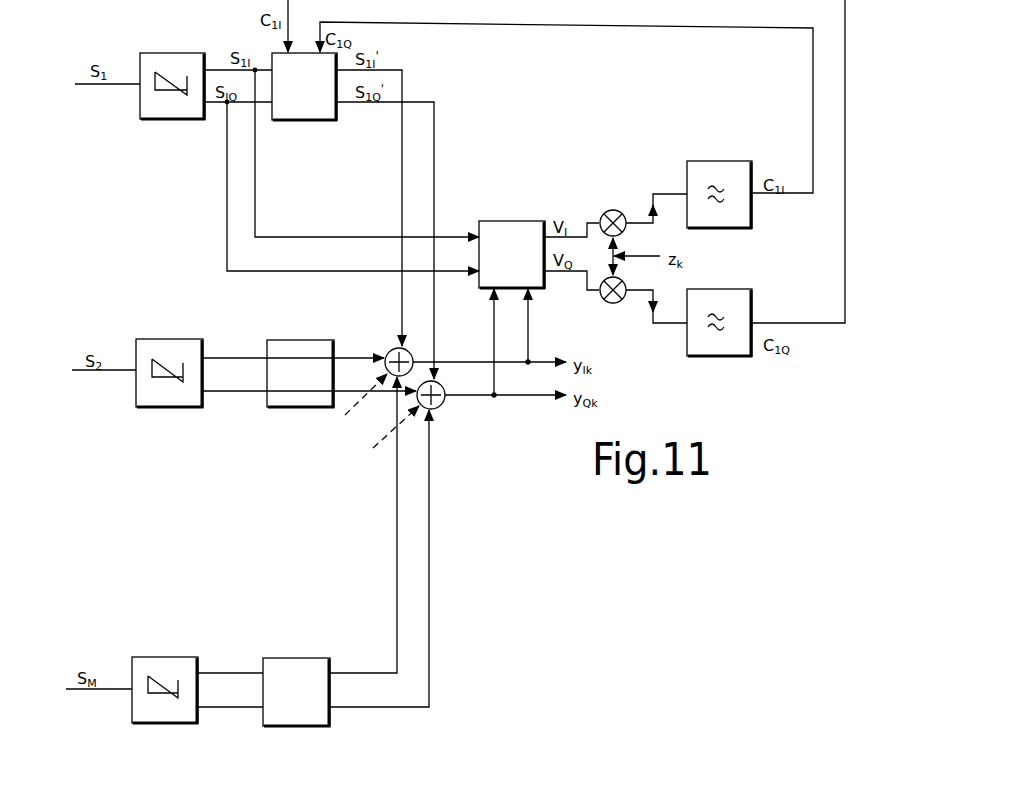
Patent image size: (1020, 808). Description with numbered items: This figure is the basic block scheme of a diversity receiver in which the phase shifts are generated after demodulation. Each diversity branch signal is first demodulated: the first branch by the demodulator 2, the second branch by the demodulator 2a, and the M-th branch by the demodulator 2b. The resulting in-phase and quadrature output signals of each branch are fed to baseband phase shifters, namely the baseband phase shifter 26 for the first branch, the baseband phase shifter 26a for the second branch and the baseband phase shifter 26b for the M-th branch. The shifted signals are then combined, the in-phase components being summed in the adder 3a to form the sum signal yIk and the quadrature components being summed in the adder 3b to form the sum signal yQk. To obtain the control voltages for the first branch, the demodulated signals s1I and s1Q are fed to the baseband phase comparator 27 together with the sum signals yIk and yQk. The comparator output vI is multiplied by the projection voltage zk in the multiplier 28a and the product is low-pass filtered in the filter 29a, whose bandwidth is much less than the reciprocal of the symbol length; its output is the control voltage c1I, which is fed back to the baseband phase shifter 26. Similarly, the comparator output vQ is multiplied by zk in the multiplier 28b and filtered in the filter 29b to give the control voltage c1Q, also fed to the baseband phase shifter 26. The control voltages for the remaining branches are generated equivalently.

The demodulator 2 is at (165, 120).
The baseband phase shifter 26 is at (312, 121).
The demodulator 2a is at (170, 408).
The baseband phase shifter 26a is at (302, 408).
The demodulator 2b is at (165, 724).
The baseband phase shifter 26b is at (297, 727).
The combining circuit adder 3a is at (393, 348).
The combining circuit adder 3b is at (440, 406).
The baseband phase comparator 27 is at (514, 220).
The multiplier 28a is at (608, 210).
The multiplier 28b is at (607, 303).
The low-pass filter 29a is at (720, 160).
The low-pass filter 29b is at (720, 357).